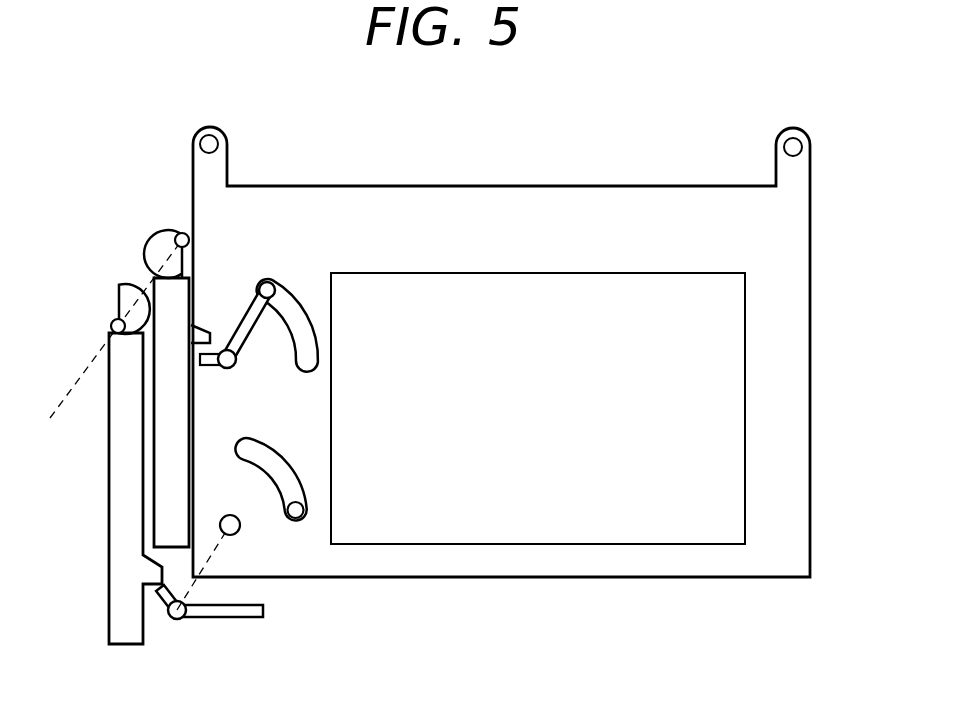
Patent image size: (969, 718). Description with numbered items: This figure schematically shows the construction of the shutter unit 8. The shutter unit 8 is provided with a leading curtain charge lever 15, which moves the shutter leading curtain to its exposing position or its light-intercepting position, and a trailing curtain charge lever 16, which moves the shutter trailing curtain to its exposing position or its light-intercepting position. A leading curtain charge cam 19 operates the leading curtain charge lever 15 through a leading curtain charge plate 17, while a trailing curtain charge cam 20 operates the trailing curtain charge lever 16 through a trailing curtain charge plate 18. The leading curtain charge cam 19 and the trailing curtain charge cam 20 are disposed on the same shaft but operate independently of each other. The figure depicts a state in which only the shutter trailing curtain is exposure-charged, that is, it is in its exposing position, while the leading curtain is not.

The shutter unit 8 is at (793, 220).
The leading curtain charge lever 15 is at (225, 612).
The trailing curtain charge lever 16 is at (247, 332).
The leading curtain charge plate 17 is at (116, 547).
The trailing curtain charge plate 18 is at (167, 452).
The leading curtain charge cam 19 is at (118, 300).
The trailing curtain charge cam 20 is at (160, 243).